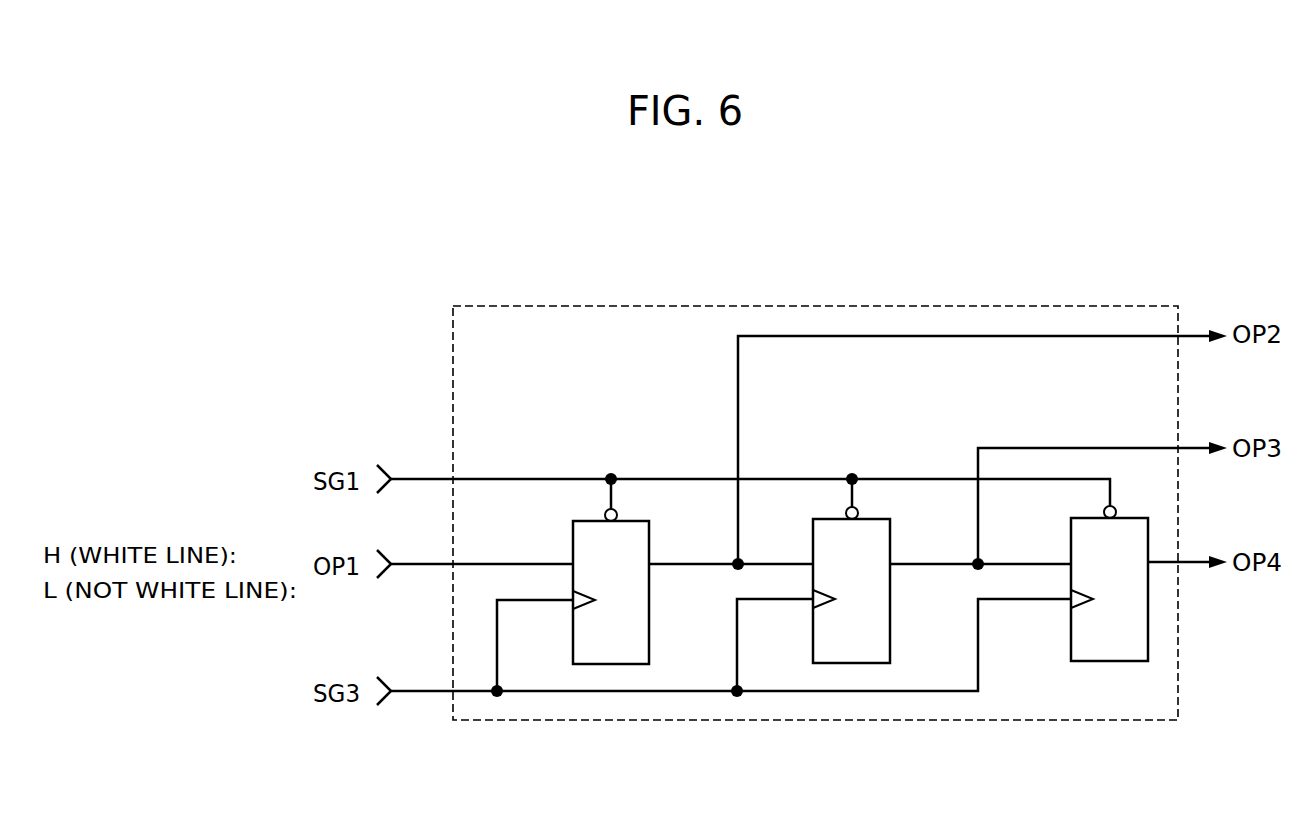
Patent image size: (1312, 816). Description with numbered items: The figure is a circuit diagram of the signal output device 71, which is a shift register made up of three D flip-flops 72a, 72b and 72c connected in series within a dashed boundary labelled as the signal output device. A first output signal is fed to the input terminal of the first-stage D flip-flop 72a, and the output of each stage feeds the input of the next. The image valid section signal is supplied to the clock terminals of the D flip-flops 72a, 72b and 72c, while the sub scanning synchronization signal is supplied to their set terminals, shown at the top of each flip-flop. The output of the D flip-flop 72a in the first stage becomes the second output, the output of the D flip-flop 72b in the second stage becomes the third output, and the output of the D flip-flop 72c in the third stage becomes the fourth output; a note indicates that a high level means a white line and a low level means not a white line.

The signal output device 71 is at (492, 306).
The D flip-flop 72a is at (650, 640).
The D flip-flop 72b is at (891, 639).
The D flip-flop 72c is at (1071, 638).